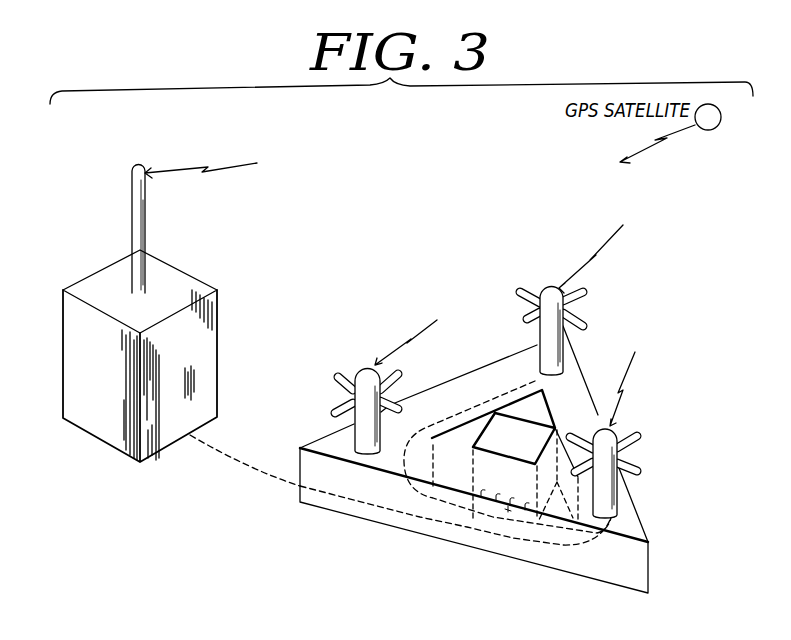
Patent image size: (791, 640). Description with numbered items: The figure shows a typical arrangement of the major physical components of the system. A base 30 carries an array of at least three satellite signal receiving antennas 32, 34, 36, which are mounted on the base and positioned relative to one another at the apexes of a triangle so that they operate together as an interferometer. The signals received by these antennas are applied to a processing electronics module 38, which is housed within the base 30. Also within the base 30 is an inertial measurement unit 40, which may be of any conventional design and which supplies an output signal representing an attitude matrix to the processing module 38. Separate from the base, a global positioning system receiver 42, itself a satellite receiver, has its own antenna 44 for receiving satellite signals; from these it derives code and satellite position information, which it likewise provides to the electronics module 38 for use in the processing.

The base 30 is at (625, 520).
The satellite signal receiving antenna 32 is at (617, 450).
The satellite signal receiving antenna 34 is at (548, 286).
The satellite signal receiving antenna 36 is at (362, 368).
The processing electronics module 38 is at (517, 445).
The inertial measurement unit 40 is at (588, 420).
The global positioning system receiver 42 is at (186, 287).
The antenna 44 is at (136, 202).